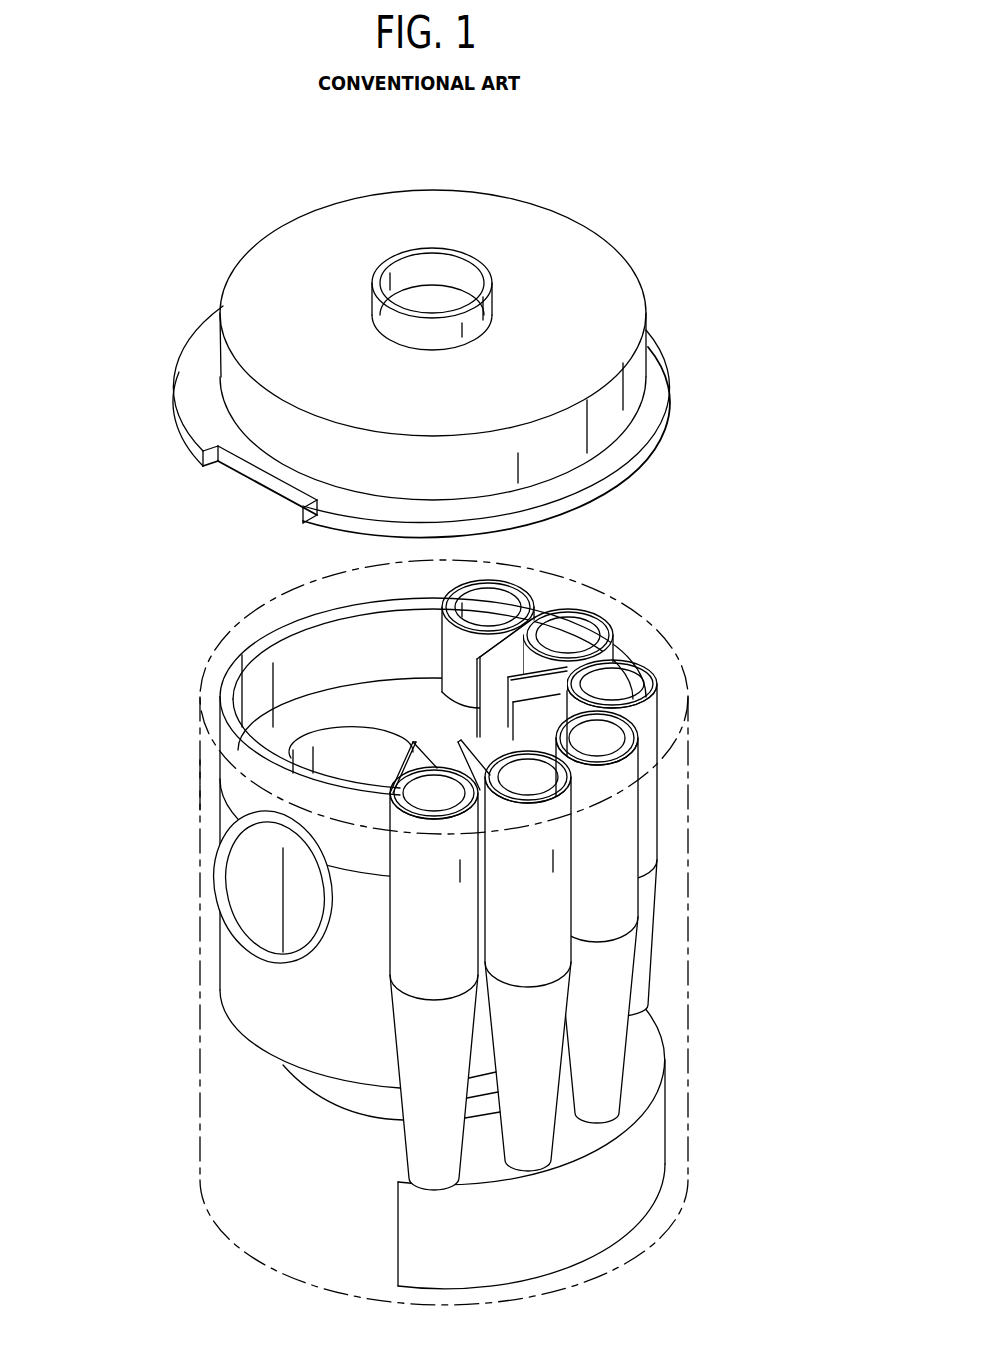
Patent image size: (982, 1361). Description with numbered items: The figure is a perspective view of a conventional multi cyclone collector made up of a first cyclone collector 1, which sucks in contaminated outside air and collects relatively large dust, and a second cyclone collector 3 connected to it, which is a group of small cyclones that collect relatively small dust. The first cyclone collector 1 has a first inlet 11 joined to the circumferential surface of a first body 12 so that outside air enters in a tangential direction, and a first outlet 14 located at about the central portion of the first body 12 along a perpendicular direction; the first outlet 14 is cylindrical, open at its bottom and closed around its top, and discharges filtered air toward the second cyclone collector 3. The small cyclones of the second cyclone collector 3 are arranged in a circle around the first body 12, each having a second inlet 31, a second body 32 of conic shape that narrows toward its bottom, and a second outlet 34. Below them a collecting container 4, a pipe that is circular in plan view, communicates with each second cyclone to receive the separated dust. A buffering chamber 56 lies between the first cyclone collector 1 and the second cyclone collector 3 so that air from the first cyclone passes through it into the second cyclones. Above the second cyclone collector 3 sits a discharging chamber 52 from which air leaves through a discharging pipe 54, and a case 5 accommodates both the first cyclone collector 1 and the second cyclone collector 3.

The first cyclone collector 1 is at (207, 787).
The second cyclone collector 3 is at (574, 877).
The collecting container 4 is at (668, 1155).
The case 5 is at (688, 994).
The first inlet 11 is at (222, 868).
The first body 12 is at (253, 1026).
The first outlet 14 is at (328, 748).
The second inlet 31 is at (487, 773).
The second body 32 is at (650, 737).
The second outlet 34 is at (504, 600).
The discharging chamber 52 is at (254, 280).
The discharging pipe 54 is at (493, 272).
The buffering chamber 56 is at (332, 703).